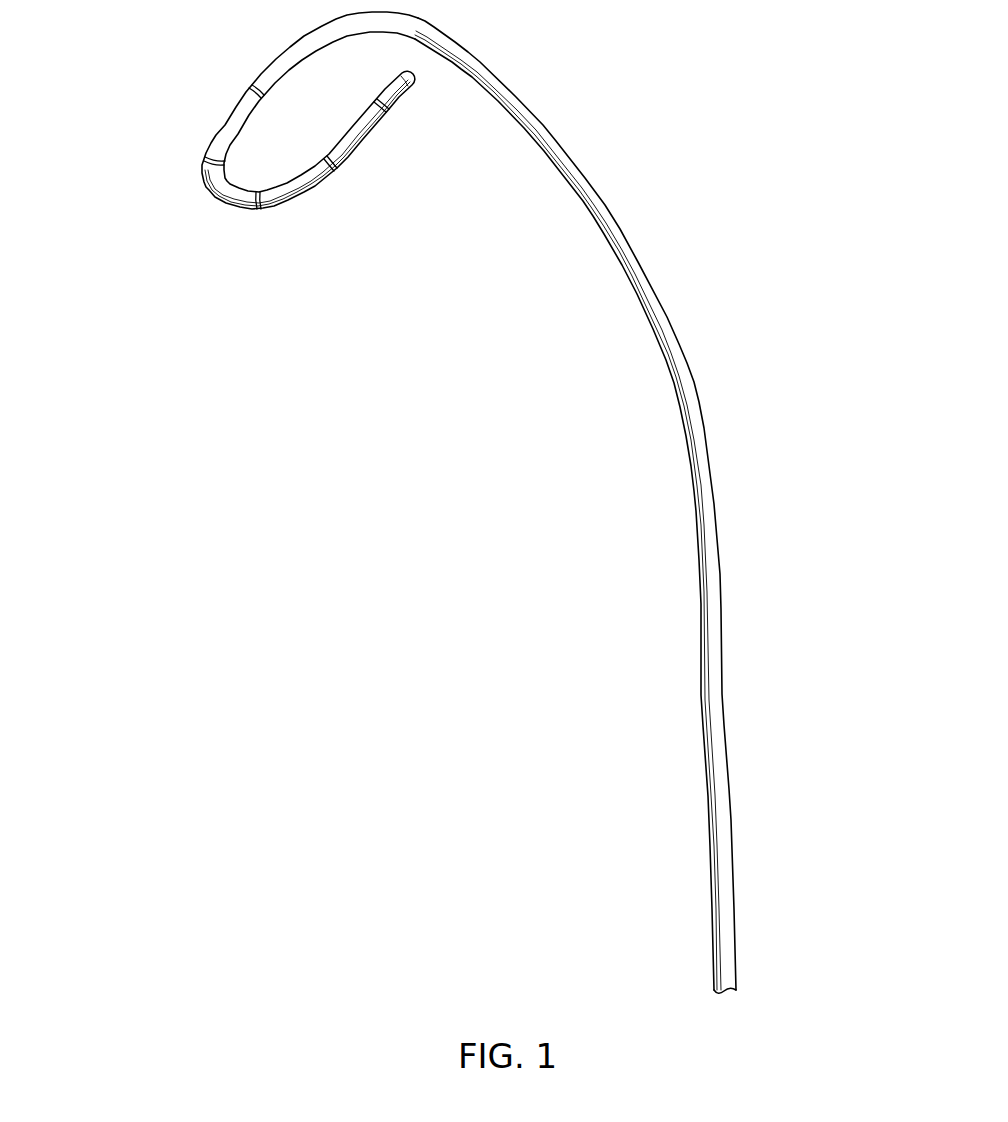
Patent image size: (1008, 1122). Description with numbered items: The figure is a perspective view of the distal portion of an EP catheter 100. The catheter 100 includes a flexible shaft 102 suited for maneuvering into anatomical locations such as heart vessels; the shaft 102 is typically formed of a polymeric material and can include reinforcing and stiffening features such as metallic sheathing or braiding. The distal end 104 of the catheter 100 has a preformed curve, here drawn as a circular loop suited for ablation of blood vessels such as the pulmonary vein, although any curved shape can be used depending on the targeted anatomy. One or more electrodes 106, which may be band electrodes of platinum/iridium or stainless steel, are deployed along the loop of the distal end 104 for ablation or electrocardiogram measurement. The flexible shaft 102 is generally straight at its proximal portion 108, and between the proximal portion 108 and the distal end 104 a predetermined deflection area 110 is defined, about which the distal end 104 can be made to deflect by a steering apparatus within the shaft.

The EP catheter 100 is at (305, 524).
The flexible shaft 102 is at (622, 262).
The distal end 104 is at (163, 223).
The electrodes 106 is at (207, 158).
The proximal portion 108 is at (643, 797).
The deflection area 110 is at (805, 340).